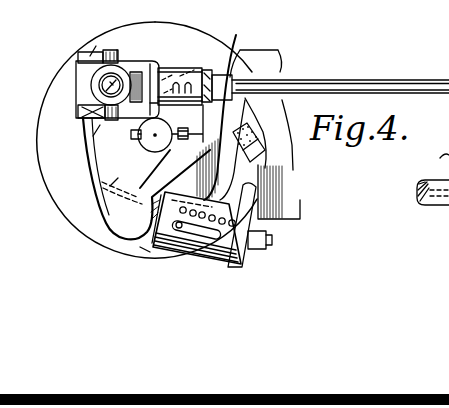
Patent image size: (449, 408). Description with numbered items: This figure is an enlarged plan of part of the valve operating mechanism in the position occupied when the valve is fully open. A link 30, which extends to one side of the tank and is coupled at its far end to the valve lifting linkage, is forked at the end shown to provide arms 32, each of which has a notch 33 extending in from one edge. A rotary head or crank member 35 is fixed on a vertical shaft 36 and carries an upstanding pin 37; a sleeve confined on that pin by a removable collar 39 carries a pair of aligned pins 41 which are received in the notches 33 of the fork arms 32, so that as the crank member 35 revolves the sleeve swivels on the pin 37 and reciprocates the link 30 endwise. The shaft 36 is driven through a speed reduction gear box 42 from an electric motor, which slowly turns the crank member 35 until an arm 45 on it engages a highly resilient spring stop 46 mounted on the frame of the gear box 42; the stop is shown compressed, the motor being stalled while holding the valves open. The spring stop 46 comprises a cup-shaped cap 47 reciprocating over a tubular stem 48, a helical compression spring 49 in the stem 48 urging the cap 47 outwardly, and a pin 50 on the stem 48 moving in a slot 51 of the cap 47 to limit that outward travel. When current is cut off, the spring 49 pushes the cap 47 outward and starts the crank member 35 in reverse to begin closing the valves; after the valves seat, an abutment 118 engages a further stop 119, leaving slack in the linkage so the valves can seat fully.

The link 30 is at (388, 87).
The fork arms 32 is at (152, 66).
The notch 33 is at (90, 55).
The crank member 35 is at (118, 178).
The vertical shaft 36 is at (152, 142).
The upstanding pin 37 is at (92, 81).
The removable collar 39 is at (91, 81).
The aligned pins 41 is at (96, 46).
The speed reduction gear box 42 is at (210, 44).
The arm 45 is at (103, 197).
The spring stop 46 is at (140, 246).
The cap 47 is at (214, 185).
The tubular stem 48 is at (300, 219).
The helical compression spring 49 is at (232, 215).
The pin 50 is at (172, 254).
The slot 51 is at (199, 230).
The abutment 118 is at (117, 50).
The stop 119 is at (246, 112).